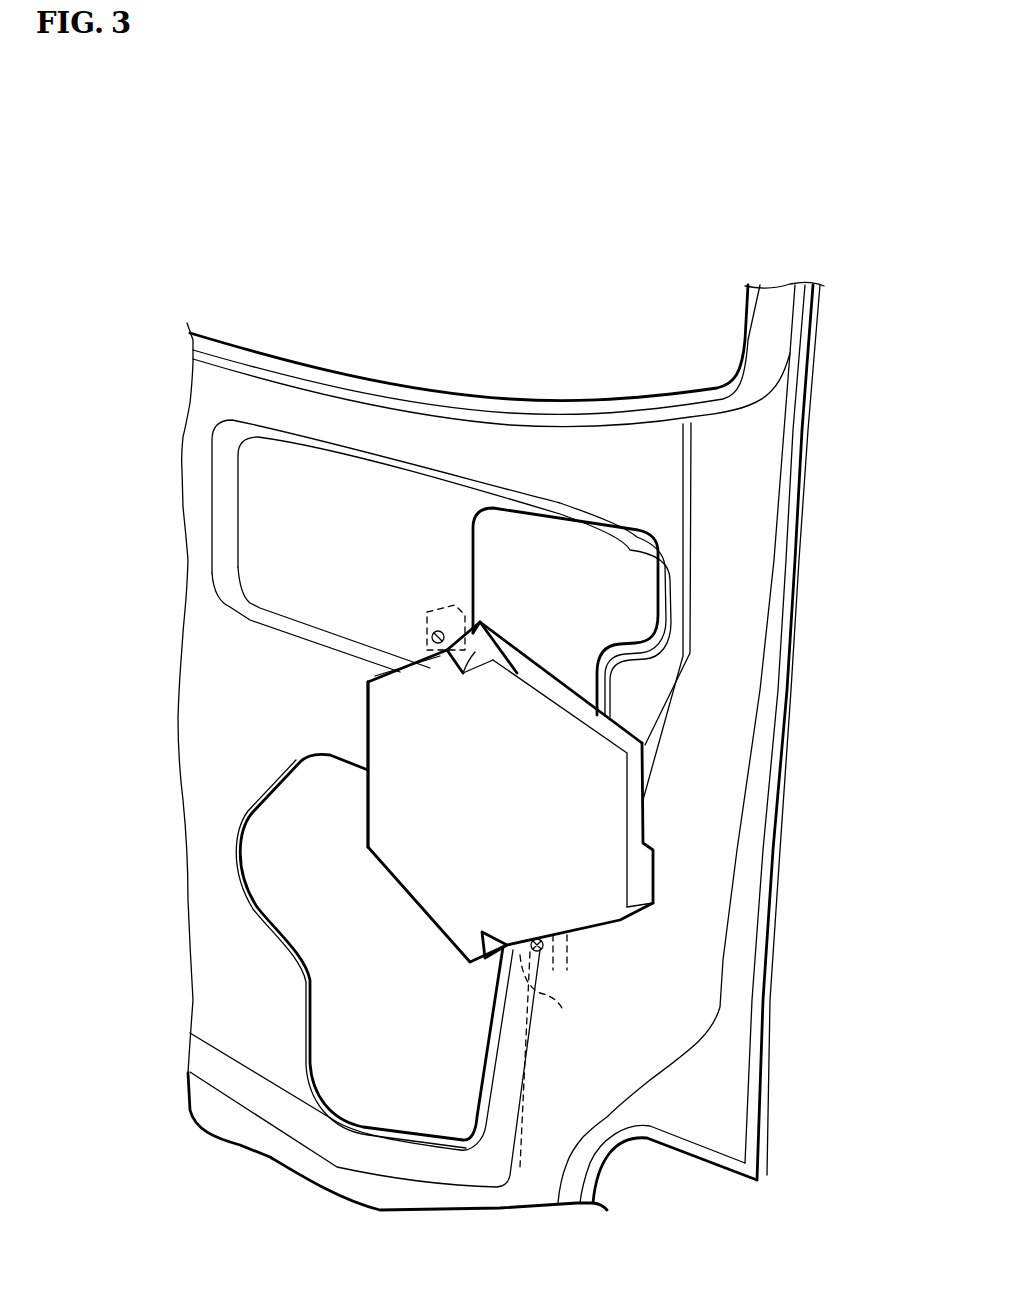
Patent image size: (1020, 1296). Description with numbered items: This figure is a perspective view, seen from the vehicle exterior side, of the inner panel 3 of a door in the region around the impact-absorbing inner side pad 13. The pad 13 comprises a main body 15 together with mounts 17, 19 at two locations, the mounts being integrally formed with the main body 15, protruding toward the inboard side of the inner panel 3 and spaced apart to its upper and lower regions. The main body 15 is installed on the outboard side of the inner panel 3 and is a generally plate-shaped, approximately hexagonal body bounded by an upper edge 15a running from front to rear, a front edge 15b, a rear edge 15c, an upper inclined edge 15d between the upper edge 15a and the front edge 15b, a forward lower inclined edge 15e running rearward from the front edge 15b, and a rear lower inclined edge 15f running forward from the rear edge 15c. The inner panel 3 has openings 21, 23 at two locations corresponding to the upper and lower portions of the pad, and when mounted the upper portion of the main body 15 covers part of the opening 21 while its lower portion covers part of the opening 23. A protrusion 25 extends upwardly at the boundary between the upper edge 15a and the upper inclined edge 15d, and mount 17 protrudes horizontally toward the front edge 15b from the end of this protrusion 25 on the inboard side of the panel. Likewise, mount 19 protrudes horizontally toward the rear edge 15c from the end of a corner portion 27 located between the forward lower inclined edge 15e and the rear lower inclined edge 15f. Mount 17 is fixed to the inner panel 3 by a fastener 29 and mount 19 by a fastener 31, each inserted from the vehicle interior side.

The inner panel 3 is at (735, 643).
The impact-absorbing inner side pad 13 is at (645, 823).
The main body 15 is at (571, 808).
The upper edge 15a is at (553, 707).
The front edge 15b is at (367, 720).
The rear edge 15c is at (635, 843).
The upper inclined edge 15d is at (412, 668).
The forward lower inclined edge 15e is at (400, 893).
The rear lower inclined edge 15f is at (597, 925).
The mount 17 is at (452, 603).
The mount 19 is at (551, 991).
The opening 21 is at (602, 567).
The opening 23 is at (392, 1060).
The protrusion 25 is at (495, 633).
The corner portion 27 is at (488, 947).
The fastener 29 is at (430, 632).
The fastener 31 is at (545, 948).